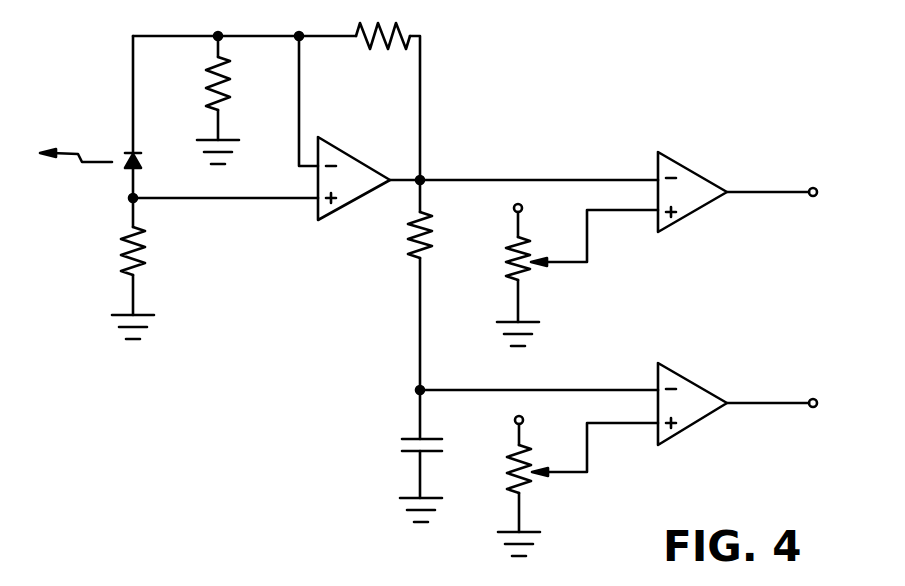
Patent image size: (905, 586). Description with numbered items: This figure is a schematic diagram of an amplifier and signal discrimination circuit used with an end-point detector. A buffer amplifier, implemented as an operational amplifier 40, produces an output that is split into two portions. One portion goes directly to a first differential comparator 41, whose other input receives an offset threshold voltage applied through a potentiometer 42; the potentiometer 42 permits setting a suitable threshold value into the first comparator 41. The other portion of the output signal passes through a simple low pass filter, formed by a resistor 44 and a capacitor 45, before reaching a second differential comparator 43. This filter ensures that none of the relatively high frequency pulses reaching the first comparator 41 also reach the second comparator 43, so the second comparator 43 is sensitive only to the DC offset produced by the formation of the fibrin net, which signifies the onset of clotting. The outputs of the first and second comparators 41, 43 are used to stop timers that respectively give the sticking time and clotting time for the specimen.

The operational amplifier 40 is at (334, 206).
The first differential comparator 41 is at (692, 202).
The potentiometer 42 is at (522, 276).
The second differential comparator 43 is at (694, 414).
The resistor 44 is at (426, 254).
The capacitor 45 is at (433, 452).